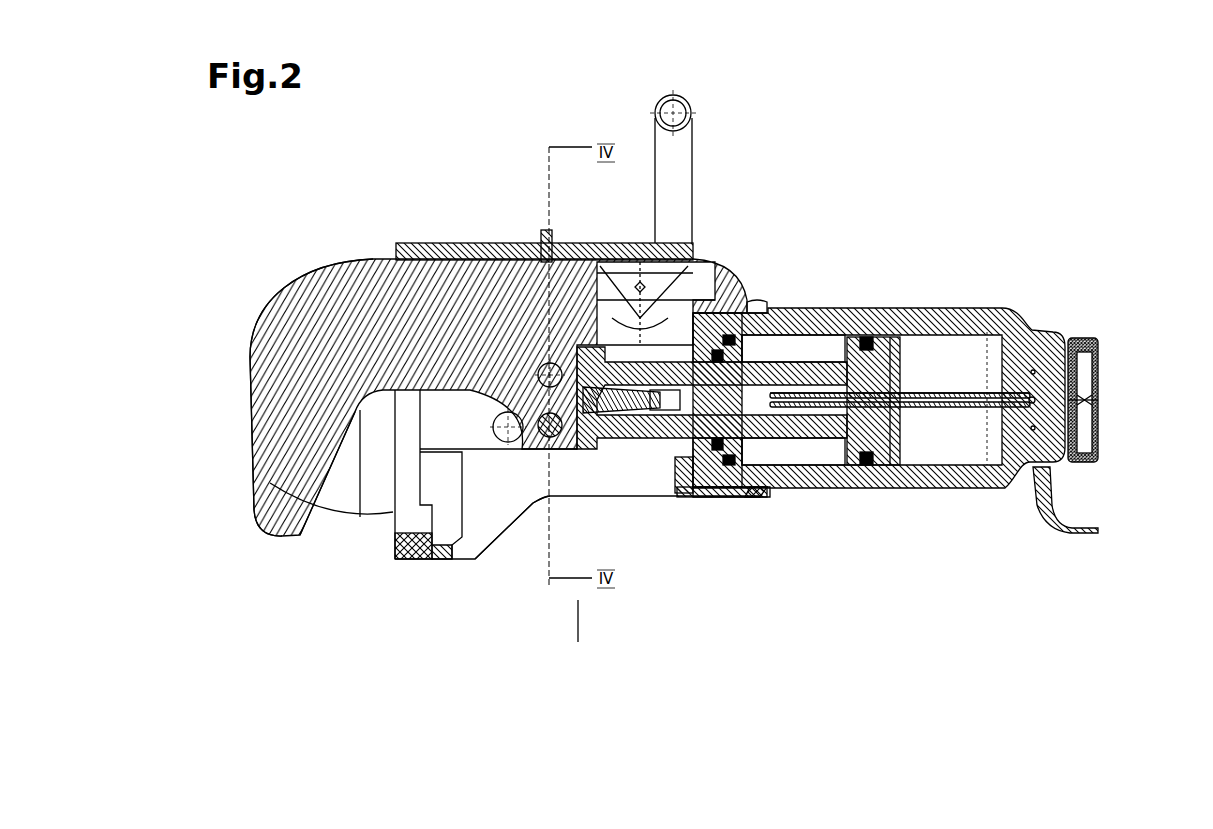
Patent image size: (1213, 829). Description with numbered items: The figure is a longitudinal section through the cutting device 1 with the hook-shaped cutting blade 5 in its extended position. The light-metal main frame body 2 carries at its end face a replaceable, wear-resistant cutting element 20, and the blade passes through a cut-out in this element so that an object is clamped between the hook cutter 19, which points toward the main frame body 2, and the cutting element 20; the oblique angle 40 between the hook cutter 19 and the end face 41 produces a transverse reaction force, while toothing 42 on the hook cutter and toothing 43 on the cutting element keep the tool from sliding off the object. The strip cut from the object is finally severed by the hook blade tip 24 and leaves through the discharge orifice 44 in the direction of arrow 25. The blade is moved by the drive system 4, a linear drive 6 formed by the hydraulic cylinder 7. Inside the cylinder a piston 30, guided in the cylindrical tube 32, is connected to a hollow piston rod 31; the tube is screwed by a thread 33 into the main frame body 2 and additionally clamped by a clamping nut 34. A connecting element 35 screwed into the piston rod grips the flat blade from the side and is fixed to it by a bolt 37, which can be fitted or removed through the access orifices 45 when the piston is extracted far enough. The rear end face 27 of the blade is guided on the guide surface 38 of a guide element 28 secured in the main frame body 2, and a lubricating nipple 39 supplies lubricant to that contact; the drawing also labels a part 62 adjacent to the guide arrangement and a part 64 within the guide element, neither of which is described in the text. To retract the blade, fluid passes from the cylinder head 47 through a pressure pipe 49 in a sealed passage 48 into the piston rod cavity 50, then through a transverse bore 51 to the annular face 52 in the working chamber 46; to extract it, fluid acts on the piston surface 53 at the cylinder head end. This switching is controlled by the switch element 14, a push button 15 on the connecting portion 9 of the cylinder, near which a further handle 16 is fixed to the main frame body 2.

The cutting device 1 is at (780, 127).
The main frame body 2 is at (680, 497).
The drive system 4 is at (630, 357).
The cutting blade 5 is at (332, 246).
The linear drive 6 is at (940, 182).
The hydraulic cylinder 7 is at (992, 73).
The connecting portion 9 is at (1070, 230).
The switch element 14 is at (1107, 402).
The push button 15 is at (1085, 328).
The handle 16 is at (690, 97).
The hook cutter 19 is at (300, 437).
The cutting element 20 is at (407, 559).
The hook blade tip 24 is at (295, 540).
The arrow 25 is at (582, 612).
The rear end face 27 is at (378, 256).
The guide element 28 is at (430, 243).
The piston 30 is at (893, 333).
The piston rod 31 is at (782, 360).
The cylindrical tube 32 is at (822, 308).
The thread 33 is at (705, 497).
The clamping nut 34 is at (752, 500).
The connecting element 35 is at (611, 470).
The bolt 37 is at (517, 507).
The guide surface 38 is at (614, 262).
The lubricating nipple 39 is at (543, 233).
The oblique angle 40 is at (333, 518).
The end face 41 is at (393, 537).
The toothing 42 is at (313, 533).
The toothing 43 is at (390, 520).
The discharge orifice 44 is at (533, 507).
The access orifices 45 is at (677, 343).
The working chamber 46 is at (788, 488).
The cylinder head 47 is at (1012, 470).
The sealed passage 48 is at (882, 470).
The pressure pipe 49 is at (815, 470).
The piston rod cavity 50 is at (759, 497).
The transverse bore 51 is at (846, 470).
The annular face 52 is at (845, 335).
The piston surface 53 is at (908, 440).
The clip 62 is at (578, 247).
The valve element 64 is at (636, 262).